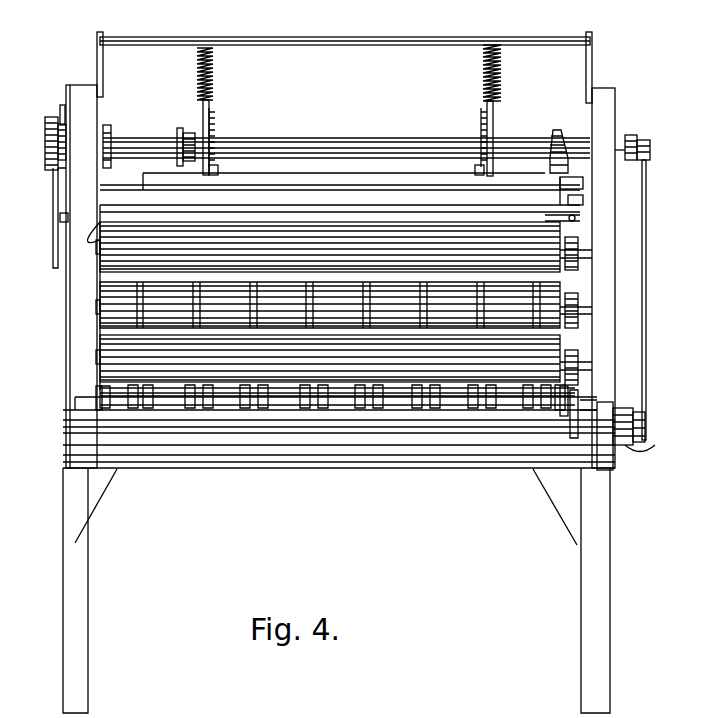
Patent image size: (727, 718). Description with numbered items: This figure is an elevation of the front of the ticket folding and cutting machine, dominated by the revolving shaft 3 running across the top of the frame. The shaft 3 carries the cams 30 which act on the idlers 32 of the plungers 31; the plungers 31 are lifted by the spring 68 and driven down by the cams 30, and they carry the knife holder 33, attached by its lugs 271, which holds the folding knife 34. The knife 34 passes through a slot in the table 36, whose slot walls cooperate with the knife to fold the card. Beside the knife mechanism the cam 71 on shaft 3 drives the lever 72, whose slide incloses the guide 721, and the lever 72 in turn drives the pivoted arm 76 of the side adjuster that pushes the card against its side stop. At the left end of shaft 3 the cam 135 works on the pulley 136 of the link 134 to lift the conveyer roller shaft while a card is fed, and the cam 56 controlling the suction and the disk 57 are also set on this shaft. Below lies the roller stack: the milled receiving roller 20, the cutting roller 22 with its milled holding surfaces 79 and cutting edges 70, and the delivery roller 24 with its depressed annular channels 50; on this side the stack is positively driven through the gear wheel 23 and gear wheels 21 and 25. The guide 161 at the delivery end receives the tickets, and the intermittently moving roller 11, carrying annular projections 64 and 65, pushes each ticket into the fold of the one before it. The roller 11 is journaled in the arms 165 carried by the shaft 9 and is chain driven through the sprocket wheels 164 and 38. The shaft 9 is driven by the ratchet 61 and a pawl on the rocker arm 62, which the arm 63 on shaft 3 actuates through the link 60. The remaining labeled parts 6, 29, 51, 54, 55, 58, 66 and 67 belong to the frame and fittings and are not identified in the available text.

The shaft 3 is at (331, 146).
The gear 6 is at (645, 433).
The shaft 9 is at (295, 410).
The roller 11 is at (240, 410).
The receiving roller 20 is at (562, 278).
The gear wheel 21 is at (580, 250).
The cutting roller 22 is at (562, 332).
The gear wheel 23 is at (580, 305).
The delivery roller 24 is at (562, 384).
The gear wheel 25 is at (580, 360).
The leg 29 is at (98, 492).
The cam 30 is at (210, 124).
The plunger 31 is at (200, 117).
The idler 32 is at (219, 170).
The knife holder 33 is at (143, 174).
The folding knife 34 is at (143, 190).
The table 36 is at (100, 224).
The sprocket wheel 38 is at (600, 400).
The annular channel 50 is at (157, 334).
The frame column 51 is at (68, 86).
The pinion 54 is at (62, 123).
The pawl 55 is at (60, 218).
The cam 56 is at (58, 120).
The disk 57 is at (45, 121).
The lever 58 is at (53, 178).
The link 60 is at (646, 182).
The ratchet 61 is at (655, 448).
The rocker arm 62 is at (646, 440).
The arm 63 is at (633, 138).
The annular projection 64 is at (150, 410).
The annular projection 65 is at (195, 410).
The post 66 is at (97, 60).
The top bar 67 is at (350, 45).
The spring 68 is at (215, 76).
The cutting edge 70 is at (138, 290).
The cam 71 is at (556, 132).
The lever 72 is at (583, 204).
The pivoted arm 76 is at (580, 218).
The milled holding surface 79 is at (155, 320).
The link 134 is at (190, 132).
The cam 135 is at (180, 155).
The pulley 136 is at (183, 141).
The guide 161 is at (412, 440).
The sprocket wheel 164 is at (592, 468).
The arm 165 is at (96, 394).
The lug 271 is at (295, 188).
The guide 721 is at (583, 183).